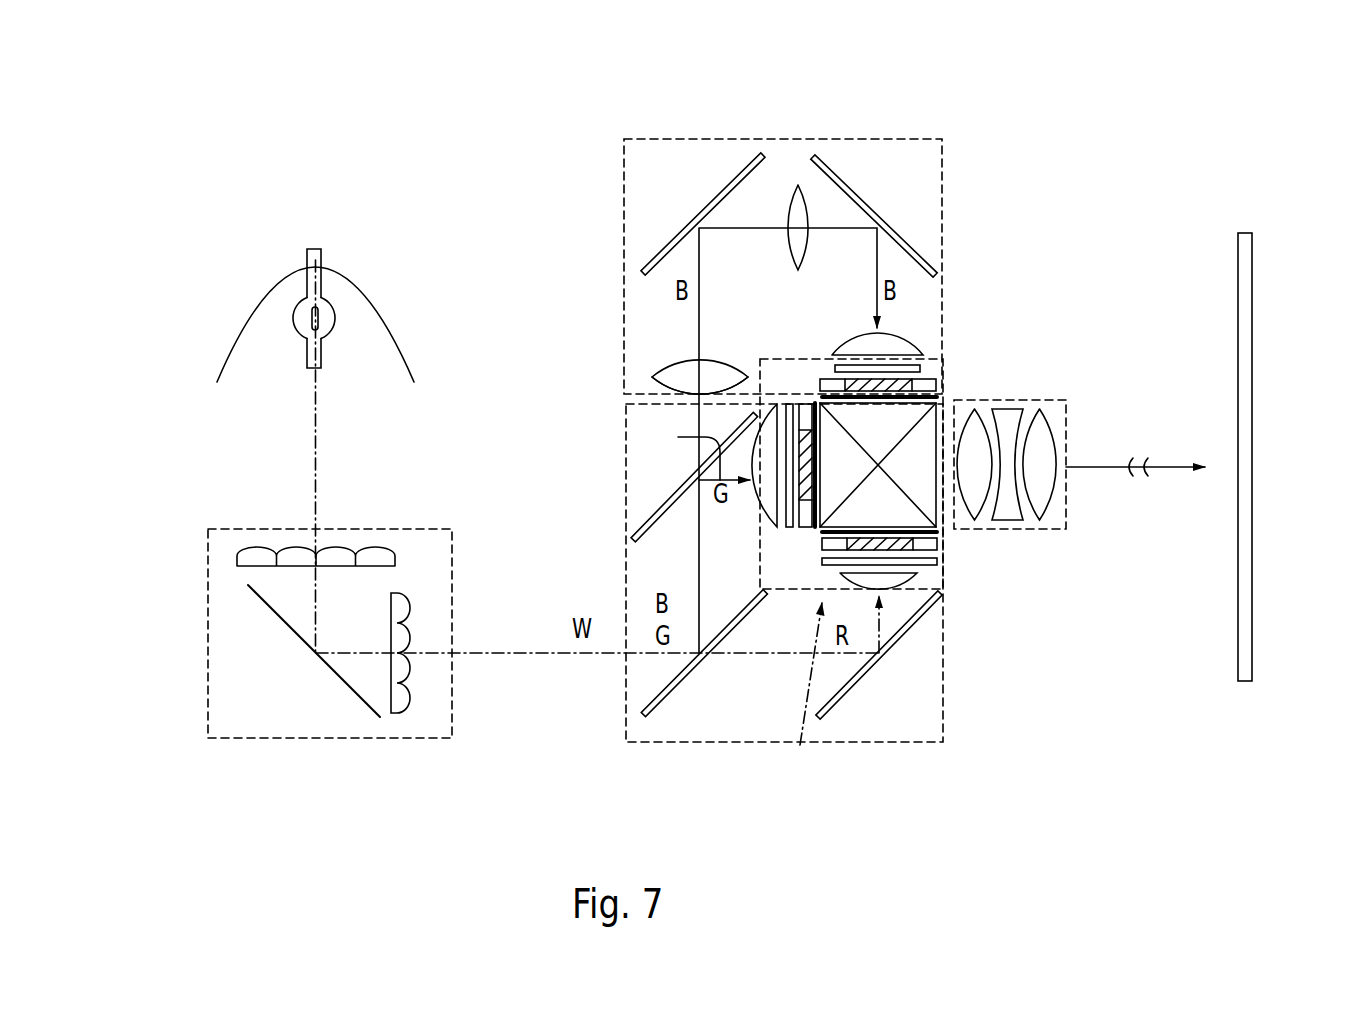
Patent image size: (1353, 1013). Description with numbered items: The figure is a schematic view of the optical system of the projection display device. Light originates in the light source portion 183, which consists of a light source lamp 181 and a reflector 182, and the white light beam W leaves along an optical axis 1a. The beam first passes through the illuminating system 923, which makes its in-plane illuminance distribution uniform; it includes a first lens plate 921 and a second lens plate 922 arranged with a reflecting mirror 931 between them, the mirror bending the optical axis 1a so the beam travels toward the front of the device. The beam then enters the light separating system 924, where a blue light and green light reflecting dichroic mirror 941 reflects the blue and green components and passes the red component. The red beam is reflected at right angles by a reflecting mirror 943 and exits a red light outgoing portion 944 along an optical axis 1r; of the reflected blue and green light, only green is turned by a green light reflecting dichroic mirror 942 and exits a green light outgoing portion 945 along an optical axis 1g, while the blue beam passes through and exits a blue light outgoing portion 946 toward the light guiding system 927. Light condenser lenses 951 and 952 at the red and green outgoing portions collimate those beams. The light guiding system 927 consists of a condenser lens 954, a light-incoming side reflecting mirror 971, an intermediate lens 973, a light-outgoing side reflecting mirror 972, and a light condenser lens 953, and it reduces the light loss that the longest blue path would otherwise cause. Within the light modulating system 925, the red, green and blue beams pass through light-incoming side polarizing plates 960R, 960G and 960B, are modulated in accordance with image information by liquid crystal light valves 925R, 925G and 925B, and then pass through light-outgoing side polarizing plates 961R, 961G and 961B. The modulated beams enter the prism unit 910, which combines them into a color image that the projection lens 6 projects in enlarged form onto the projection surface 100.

The light source portion 183 is at (315, 256).
The light source lamp 181 is at (298, 305).
The reflector 182 is at (350, 272).
The optical axis 1a is at (317, 502).
The first lens plate 921 is at (257, 558).
The second lens plate 922 is at (394, 715).
The illuminating system 923 is at (267, 646).
The reflecting mirror 931 is at (337, 673).
The light guiding system 927 is at (768, 232).
The light-incoming side reflecting mirror 971 is at (672, 237).
The light-outgoing side reflecting mirror 972 is at (850, 187).
The intermediate lens 973 is at (798, 183).
The condenser lens 954 is at (676, 362).
The blue light outgoing portion 946 is at (680, 394).
The light condenser lens 953 is at (903, 337).
The light separating system 924 is at (788, 601).
The green light reflecting dichroic mirror 942 is at (667, 498).
The optical axis 1g is at (685, 448).
The green light outgoing portion 945 is at (757, 487).
The blue light and green light reflecting dichroic mirror 941 is at (658, 702).
The reflecting mirror 943 is at (835, 715).
The red light outgoing portion 944 is at (903, 590).
The optical axis 1r is at (800, 745).
The light condenser lens 951 is at (917, 585).
The prism unit 910 is at (891, 533).
The light-incoming side polarizing plate 960B is at (920, 366).
The liquid crystal light valve 925B is at (936, 385).
The light-outgoing side polarizing plate 961B is at (937, 397).
The light-incoming side polarizing plate 960G is at (789, 528).
The liquid crystal light valve 925G is at (802, 404).
The light-outgoing side polarizing plate 961G is at (815, 530).
The light condenser lens 952 is at (782, 403).
The light-outgoing side polarizing plate 961R is at (937, 533).
The liquid crystal light valve 925R is at (937, 547).
The light-incoming side polarizing plate 960R is at (937, 565).
The light modulating system 925 is at (822, 552).
The projection lens 6 is at (1068, 402).
The projection surface 100 is at (1252, 316).